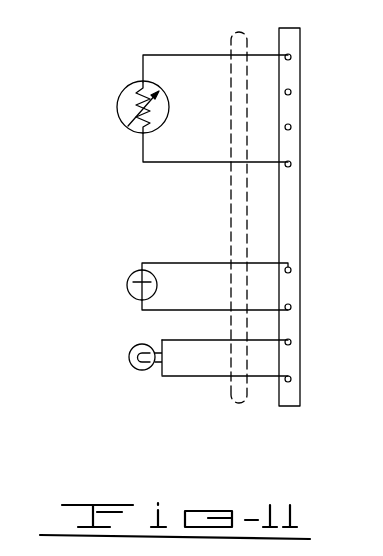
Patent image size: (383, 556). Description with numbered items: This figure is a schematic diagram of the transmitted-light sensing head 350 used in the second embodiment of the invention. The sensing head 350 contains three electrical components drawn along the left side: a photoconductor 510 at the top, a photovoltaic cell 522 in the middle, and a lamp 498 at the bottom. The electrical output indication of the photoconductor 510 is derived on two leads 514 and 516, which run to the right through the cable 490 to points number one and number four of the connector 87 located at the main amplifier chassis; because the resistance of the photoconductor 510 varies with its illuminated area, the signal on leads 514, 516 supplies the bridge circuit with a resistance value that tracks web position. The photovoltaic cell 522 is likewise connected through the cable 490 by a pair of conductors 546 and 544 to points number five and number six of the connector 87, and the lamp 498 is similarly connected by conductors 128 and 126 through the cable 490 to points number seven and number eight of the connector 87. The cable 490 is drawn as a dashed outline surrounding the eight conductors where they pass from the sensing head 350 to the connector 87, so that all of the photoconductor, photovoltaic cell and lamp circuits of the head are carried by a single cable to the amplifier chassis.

The sensing head 350 is at (121, 73).
The photoconductor 510 is at (118, 116).
The lead 514 is at (170, 55).
The lead 516 is at (167, 162).
The photovoltaic cell 522 is at (127, 290).
The lead wire 546 is at (168, 263).
The lead wire 544 is at (166, 310).
The lamp 498 is at (130, 366).
The lead wire 128 is at (177, 341).
The lead wire 126 is at (171, 377).
The cable 490 is at (237, 404).
The connector 87 is at (290, 406).